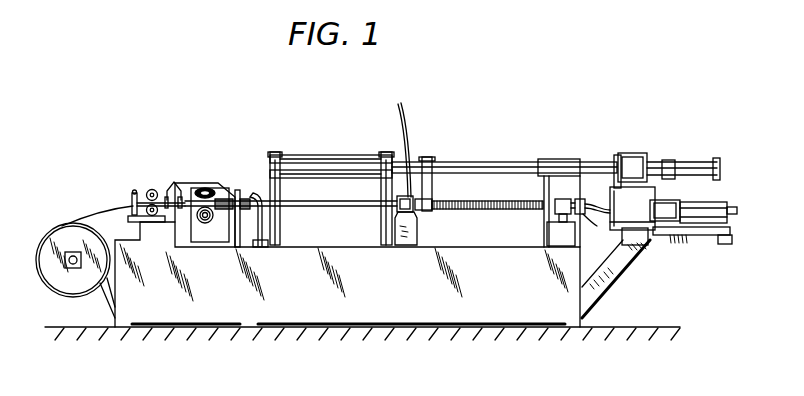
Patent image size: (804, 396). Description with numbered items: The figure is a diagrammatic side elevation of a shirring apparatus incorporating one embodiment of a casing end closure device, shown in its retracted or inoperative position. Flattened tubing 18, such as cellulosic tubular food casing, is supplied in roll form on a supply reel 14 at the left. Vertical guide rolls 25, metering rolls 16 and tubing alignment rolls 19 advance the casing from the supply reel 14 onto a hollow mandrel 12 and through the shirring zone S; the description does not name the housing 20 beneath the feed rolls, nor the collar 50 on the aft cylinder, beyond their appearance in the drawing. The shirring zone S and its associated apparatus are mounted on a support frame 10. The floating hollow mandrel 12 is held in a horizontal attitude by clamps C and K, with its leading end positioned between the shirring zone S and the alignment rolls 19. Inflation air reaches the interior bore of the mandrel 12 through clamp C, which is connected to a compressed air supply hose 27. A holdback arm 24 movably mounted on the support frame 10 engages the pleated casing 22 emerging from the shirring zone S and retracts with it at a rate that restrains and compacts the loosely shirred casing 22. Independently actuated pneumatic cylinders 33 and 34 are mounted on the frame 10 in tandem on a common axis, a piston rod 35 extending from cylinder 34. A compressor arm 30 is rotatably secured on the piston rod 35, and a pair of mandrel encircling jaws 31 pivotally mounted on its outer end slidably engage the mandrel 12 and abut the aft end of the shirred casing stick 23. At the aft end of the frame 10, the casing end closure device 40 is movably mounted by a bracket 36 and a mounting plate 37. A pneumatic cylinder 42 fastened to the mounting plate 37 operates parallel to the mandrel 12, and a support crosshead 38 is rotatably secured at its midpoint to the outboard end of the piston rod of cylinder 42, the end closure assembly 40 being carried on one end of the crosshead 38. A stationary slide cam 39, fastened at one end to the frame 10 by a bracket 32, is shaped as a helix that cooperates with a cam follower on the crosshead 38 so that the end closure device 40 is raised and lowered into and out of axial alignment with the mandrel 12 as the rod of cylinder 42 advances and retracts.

The support frame 10 is at (303, 310).
The supply reel 14 is at (62, 284).
The flattened tubing 18 is at (101, 211).
The vertical guide rolls 25 is at (134, 193).
The metering rolls 16 is at (152, 189).
The tubing alignment rolls 19 is at (175, 184).
The feed unit housing 20 is at (182, 211).
The shirring zone S is at (205, 224).
The pleated casing 22 is at (230, 196).
The holdback arm 24 is at (256, 191).
The pneumatic cylinder 34 is at (337, 163).
The compressed air supply hose 27 is at (404, 112).
The hollow mandrel 12 is at (416, 197).
The clamp C is at (420, 232).
The compressor arm 30 is at (425, 172).
The mandrel encircling jaws 31 is at (430, 213).
The shirred casing stick 23 is at (526, 202).
The piston rod 35 is at (505, 163).
The clamp K is at (554, 214).
The bracket 32 is at (583, 207).
The stationary slide cam 39 is at (604, 214).
The casing end closure device 40 is at (664, 159).
The pneumatic cylinder 33 is at (693, 164).
The collar 50 is at (672, 208).
The pneumatic cylinder 42 is at (716, 205).
The mounting plate 37 is at (688, 238).
The support crosshead 38 is at (630, 260).
The bracket 36 is at (598, 294).